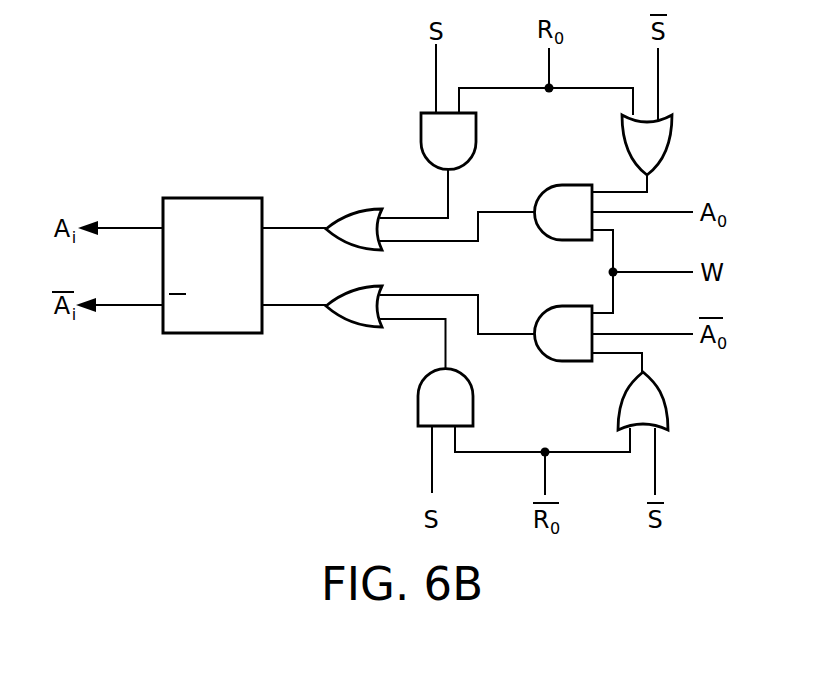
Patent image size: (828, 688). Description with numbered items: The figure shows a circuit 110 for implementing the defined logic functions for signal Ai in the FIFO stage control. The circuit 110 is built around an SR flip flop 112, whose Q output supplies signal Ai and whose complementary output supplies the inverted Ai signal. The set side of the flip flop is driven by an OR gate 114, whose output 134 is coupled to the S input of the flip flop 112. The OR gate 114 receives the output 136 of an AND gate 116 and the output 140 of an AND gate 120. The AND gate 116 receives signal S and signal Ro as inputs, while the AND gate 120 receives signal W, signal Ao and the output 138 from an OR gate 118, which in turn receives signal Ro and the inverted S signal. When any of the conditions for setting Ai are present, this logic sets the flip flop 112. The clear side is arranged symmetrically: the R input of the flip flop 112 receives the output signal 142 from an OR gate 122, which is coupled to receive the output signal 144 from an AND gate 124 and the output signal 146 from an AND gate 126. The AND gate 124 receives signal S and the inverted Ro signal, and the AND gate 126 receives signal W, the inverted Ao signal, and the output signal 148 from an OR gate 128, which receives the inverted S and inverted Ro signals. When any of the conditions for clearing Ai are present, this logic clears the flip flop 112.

The circuit 110 is at (296, 80).
The SR flip flop 112 is at (215, 199).
The OR gate 114 is at (352, 222).
The AND gate 116 is at (430, 147).
The OR gate 118 is at (657, 141).
The AND gate 120 is at (547, 226).
The OR gate 122 is at (352, 316).
The AND gate 124 is at (464, 416).
The AND gate 126 is at (547, 347).
The OR gate 128 is at (653, 402).
The output of OR gate 114 134 is at (292, 230).
The output of AND gate 116 136 is at (411, 217).
The output from OR gate 118 138 is at (651, 187).
The output of AND gate 120 140 is at (440, 243).
The output signal from OR gate 122 142 is at (292, 307).
The output signal from AND gate 124 144 is at (413, 321).
The output signal from AND gate 126 146 is at (414, 295).
The output signal from OR gate 128 148 is at (648, 352).